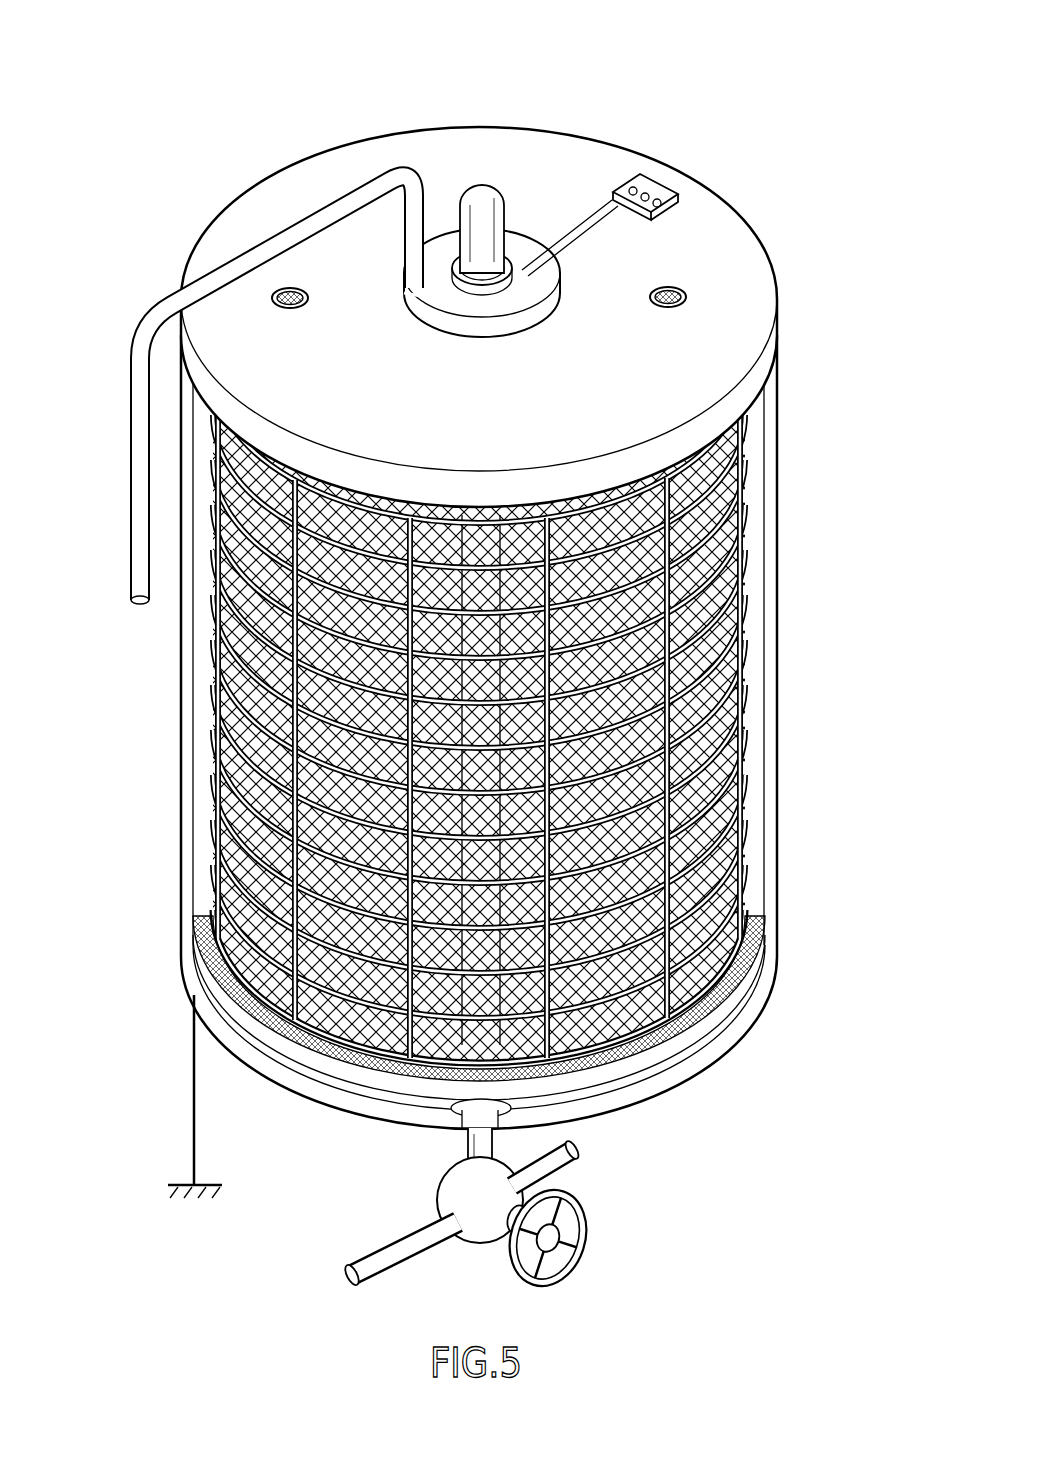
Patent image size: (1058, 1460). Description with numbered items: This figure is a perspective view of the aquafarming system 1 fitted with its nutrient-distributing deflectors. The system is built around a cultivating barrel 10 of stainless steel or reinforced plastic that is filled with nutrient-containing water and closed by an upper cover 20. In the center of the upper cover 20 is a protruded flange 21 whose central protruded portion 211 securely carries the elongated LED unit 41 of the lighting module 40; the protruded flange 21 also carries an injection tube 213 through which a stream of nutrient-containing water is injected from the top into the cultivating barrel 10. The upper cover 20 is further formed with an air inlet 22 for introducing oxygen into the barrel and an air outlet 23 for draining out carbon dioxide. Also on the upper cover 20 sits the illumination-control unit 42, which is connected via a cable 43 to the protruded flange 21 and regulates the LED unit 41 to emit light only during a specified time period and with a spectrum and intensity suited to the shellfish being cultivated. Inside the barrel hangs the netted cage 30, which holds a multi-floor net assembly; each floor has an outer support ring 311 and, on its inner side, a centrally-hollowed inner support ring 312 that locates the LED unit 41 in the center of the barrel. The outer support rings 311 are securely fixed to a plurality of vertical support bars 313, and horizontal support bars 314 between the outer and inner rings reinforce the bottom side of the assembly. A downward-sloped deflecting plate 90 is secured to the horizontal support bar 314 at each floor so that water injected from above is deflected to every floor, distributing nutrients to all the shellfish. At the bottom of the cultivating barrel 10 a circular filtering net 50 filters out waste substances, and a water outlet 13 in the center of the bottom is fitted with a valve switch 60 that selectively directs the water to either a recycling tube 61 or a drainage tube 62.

The aquafarming system 1 is at (512, 88).
The cultivating barrel 10 is at (745, 1004).
The water outlet 13 is at (472, 1155).
The upper cover 20 is at (779, 262).
The protruded flange 21 is at (548, 272).
The central protruded portion 211 is at (500, 292).
The injection tube 213 is at (160, 308).
The air inlet 22 is at (687, 300).
The air outlet 23 is at (292, 290).
The netted cage 30 is at (207, 796).
The outer support ring 311 is at (230, 1016).
The inner support ring 312 is at (742, 672).
The vertical support bars 313 is at (215, 918).
The horizontal support bars 314 is at (232, 718).
The lighting module 40 is at (815, 147).
The LED unit 41 is at (487, 218).
The illumination-control unit 42 is at (668, 190).
The cable 43 is at (598, 217).
The circular filtering net 50 is at (313, 1093).
The valve switch 60 is at (588, 1266).
The recycling tube 61 is at (385, 1258).
The drainage tube 62 is at (585, 1158).
The deflecting plate 90 is at (733, 967).